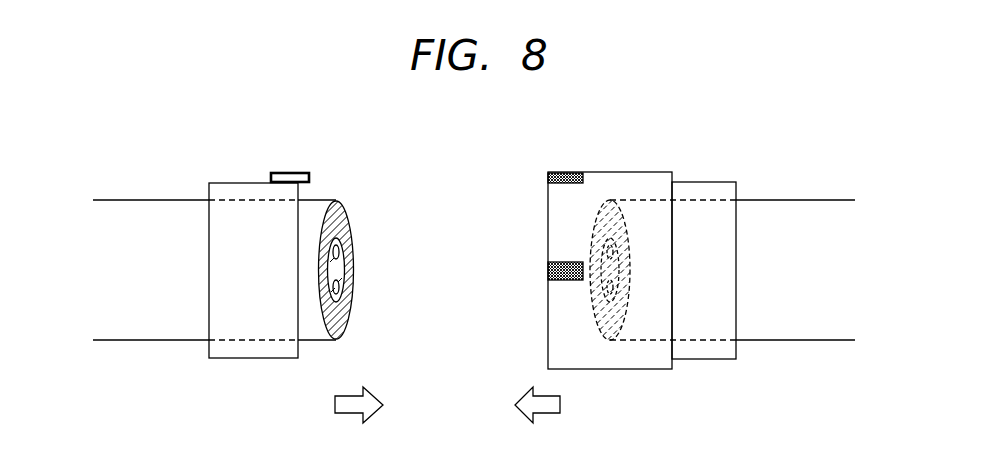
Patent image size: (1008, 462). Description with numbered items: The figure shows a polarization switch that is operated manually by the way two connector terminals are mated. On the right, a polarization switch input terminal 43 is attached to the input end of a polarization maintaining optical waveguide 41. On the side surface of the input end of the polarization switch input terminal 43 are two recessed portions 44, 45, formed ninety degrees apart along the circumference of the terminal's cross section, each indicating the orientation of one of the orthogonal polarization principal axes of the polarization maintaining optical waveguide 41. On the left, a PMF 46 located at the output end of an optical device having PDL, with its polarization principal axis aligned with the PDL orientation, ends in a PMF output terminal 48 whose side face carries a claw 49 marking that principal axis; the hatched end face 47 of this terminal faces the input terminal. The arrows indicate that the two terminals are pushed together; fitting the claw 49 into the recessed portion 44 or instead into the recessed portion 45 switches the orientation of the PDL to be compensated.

The polarization maintaining optical waveguide 41 is at (783, 342).
The polarization switch input terminal 43 is at (638, 370).
The recessed portion 44 is at (548, 178).
The recessed portion 45 is at (548, 270).
The PMF 46 is at (168, 343).
The plug end face 47 is at (352, 308).
The PMF output terminal 48 is at (238, 360).
The claw 49 is at (290, 172).